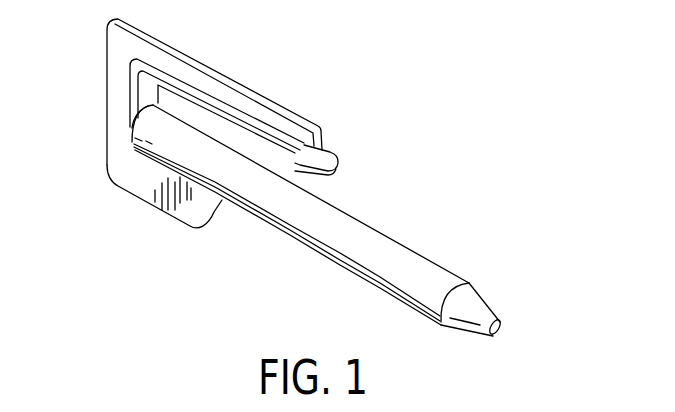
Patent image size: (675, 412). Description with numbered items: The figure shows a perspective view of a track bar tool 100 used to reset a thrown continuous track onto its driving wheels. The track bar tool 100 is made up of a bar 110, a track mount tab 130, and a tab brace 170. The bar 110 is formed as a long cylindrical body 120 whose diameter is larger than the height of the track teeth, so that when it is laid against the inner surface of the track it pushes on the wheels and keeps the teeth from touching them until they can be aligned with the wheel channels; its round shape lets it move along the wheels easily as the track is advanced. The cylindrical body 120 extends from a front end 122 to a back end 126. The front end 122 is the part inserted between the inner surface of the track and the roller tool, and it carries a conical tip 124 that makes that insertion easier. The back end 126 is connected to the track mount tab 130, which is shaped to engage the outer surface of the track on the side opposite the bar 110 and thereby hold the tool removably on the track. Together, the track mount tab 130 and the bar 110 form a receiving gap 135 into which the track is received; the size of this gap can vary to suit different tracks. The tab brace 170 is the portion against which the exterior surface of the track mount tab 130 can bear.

The track bar tool 100 is at (530, 144).
The bar 110 is at (330, 219).
The cylindrical body 120 is at (300, 266).
The front end 122 is at (442, 259).
The conical tip 124 is at (530, 311).
The back end 126 is at (126, 128).
The track mount tab 130 is at (362, 154).
The receiving gap 135 is at (288, 167).
The tab brace 170 is at (107, 199).